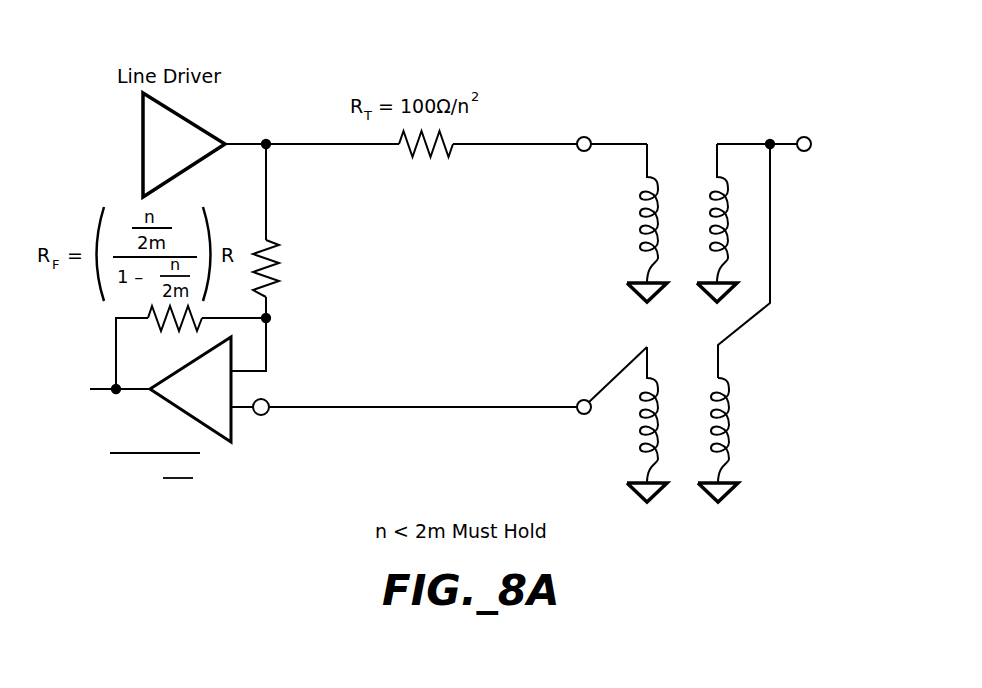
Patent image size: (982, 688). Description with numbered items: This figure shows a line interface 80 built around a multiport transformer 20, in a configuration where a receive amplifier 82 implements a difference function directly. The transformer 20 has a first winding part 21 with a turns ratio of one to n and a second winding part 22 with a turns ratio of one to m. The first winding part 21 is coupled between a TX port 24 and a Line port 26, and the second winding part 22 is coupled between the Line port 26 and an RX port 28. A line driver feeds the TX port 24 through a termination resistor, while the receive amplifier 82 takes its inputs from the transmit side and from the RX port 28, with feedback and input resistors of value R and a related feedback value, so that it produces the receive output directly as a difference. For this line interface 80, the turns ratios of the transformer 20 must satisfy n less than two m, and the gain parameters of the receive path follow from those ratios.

The line interface 80 is at (519, 42).
The transformer 20 is at (702, 87).
The first winding part 21 is at (733, 221).
The second winding part 22 is at (732, 424).
The TX port 24 is at (584, 137).
The Line port 26 is at (810, 149).
The RX port 28 is at (584, 414).
The receive amplifier 82 is at (253, 470).